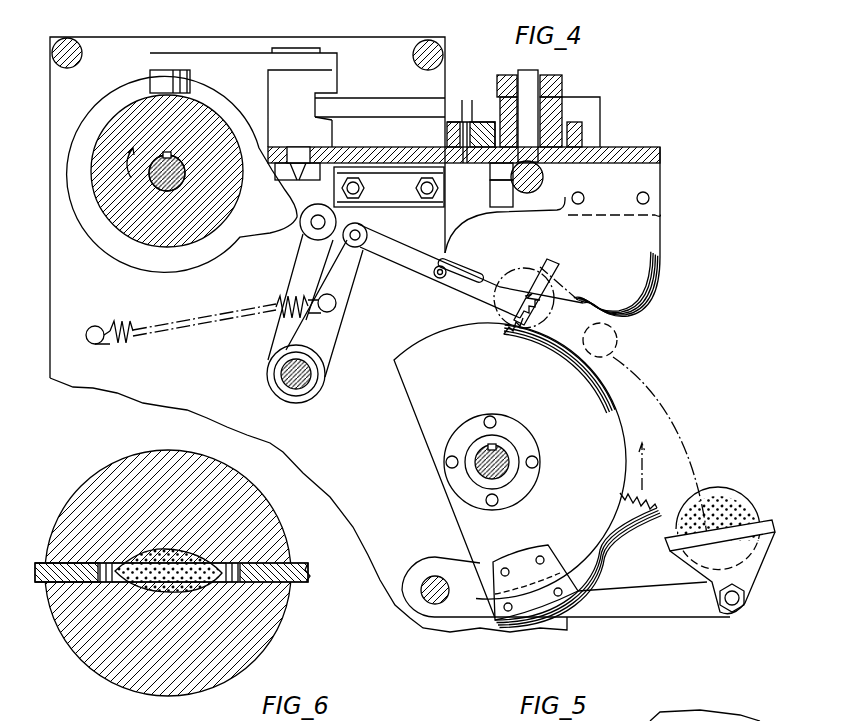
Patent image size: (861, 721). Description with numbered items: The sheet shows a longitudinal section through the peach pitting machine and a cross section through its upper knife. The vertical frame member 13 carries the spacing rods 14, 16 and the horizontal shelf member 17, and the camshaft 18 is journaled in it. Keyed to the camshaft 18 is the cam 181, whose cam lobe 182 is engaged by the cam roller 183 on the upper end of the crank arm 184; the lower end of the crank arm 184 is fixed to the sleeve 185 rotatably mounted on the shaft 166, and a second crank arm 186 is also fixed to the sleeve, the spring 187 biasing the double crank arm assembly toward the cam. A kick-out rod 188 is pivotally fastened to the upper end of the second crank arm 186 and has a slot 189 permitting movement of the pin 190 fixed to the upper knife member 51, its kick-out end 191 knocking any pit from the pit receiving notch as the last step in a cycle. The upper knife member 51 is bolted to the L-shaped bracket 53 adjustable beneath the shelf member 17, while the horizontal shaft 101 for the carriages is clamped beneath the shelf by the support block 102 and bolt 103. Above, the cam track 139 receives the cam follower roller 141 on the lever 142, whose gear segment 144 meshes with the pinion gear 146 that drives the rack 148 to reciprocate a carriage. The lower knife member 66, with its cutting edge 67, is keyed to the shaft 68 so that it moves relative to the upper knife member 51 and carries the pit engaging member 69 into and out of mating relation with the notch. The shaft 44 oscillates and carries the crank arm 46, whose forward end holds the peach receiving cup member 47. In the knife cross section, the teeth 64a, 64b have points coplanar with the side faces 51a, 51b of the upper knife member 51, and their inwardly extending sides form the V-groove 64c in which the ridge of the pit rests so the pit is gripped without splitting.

In FIG. 4, the frame member 13 is at (381, 48).
In FIG. 4, the spacing rod 14 is at (70, 47).
In FIG. 4, the spacing rod 16 is at (444, 50).
In FIG. 4, the shelf member 17 is at (406, 150).
In FIG. 4, the camshaft 18 is at (176, 178).
In FIG. 4, the cam track 139 is at (100, 108).
In FIG. 4, the cam follower roller 141 is at (150, 76).
In FIG. 4, the lever 142 is at (388, 104).
In FIG. 4, the gear segment 144 is at (482, 104).
In FIG. 4, the pinion gear 146 is at (562, 98).
In FIG. 4, the rack 148 is at (575, 135).
In FIG. 4, the horizontal shaft 101 is at (545, 178).
In FIG. 4, the support block 102 is at (490, 200).
In FIG. 4, the bolt 103 is at (490, 177).
In FIG. 4, the upper knife member 51 is at (660, 245).
In FIG. 4, the L-shaped bracket 53 is at (660, 216).
In FIG. 4, the cam 181 is at (150, 272).
In FIG. 4, the cam lobe 182 is at (287, 222).
In FIG. 4, the cam roller 183 is at (340, 216).
In FIG. 4, the crank arm 184 is at (320, 280).
In FIG. 4, the sleeve 185 is at (296, 396).
In FIG. 4, the shaft 166 is at (310, 383).
In FIG. 4, the second crank arm 186 is at (332, 343).
In FIG. 4, the spring 187 is at (180, 337).
In FIG. 4, the kick-out rod 188 is at (404, 262).
In FIG. 4, the slot 189 is at (455, 273).
In FIG. 4, the pin 190 is at (432, 282).
In FIG. 4, the kick-out end 191 is at (558, 268).
In FIG. 4, the lower knife member 66 is at (612, 432).
In FIG. 4, the cutting edge 67 is at (595, 396).
In FIG. 4, the shaft 68 is at (504, 480).
In FIG. 4, the pit engaging member 69 is at (600, 582).
In FIG. 6, the pit engaging member 69 is at (300, 585).
In FIG. 4, the shaft 44 is at (434, 604).
In FIG. 4, the crank arm 46 is at (670, 612).
In FIG. 4, the peach receiving cup member 47 is at (762, 547).
In FIG. 6, the side face 51a is at (64, 563).
In FIG. 6, the side face 51b is at (55, 582).
In FIG. 6, the teeth 64a is at (120, 563).
In FIG. 6, the teeth 64b is at (152, 590).
In FIG. 6, the V-groove 64c is at (112, 595).